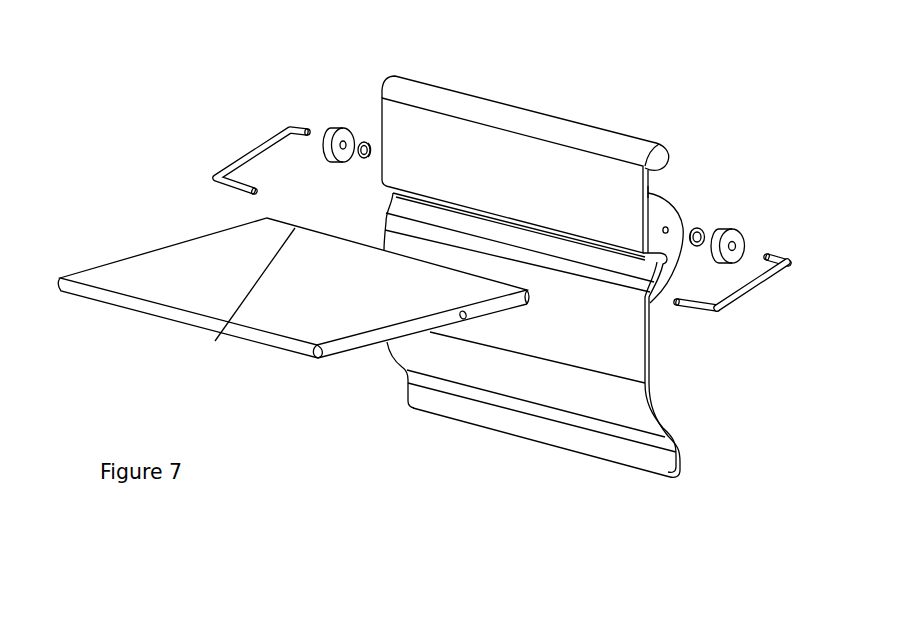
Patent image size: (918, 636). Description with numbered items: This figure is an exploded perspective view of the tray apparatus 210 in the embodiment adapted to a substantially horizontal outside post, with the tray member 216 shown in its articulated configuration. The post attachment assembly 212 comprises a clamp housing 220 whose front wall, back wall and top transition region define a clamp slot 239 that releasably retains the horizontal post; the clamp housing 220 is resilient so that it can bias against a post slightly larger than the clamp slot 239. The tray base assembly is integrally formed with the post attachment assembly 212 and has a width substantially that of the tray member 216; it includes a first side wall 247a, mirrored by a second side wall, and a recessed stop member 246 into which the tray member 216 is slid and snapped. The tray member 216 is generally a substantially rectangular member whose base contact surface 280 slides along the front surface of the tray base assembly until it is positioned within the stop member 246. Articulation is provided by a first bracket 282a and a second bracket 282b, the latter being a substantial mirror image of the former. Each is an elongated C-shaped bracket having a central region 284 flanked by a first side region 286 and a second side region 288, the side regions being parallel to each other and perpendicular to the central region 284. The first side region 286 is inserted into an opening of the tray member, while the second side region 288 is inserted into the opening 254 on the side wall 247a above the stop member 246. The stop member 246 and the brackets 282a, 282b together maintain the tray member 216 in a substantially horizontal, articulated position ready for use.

The tray apparatus 210 is at (210, 76).
The post attachment assembly 212 is at (613, 135).
The tray member 216 is at (162, 283).
The clamp housing 220 is at (668, 150).
The clamp slot 239 is at (664, 188).
The recessed stop member 246 is at (512, 228).
The first side wall 247a is at (672, 238).
The opening 254 is at (668, 228).
The base contact surface 280 is at (215, 341).
The first bracket 282a is at (773, 281).
The second bracket 282b is at (243, 148).
The central region 284 is at (755, 297).
The first side region 286 is at (692, 308).
The second side region 288 is at (777, 257).